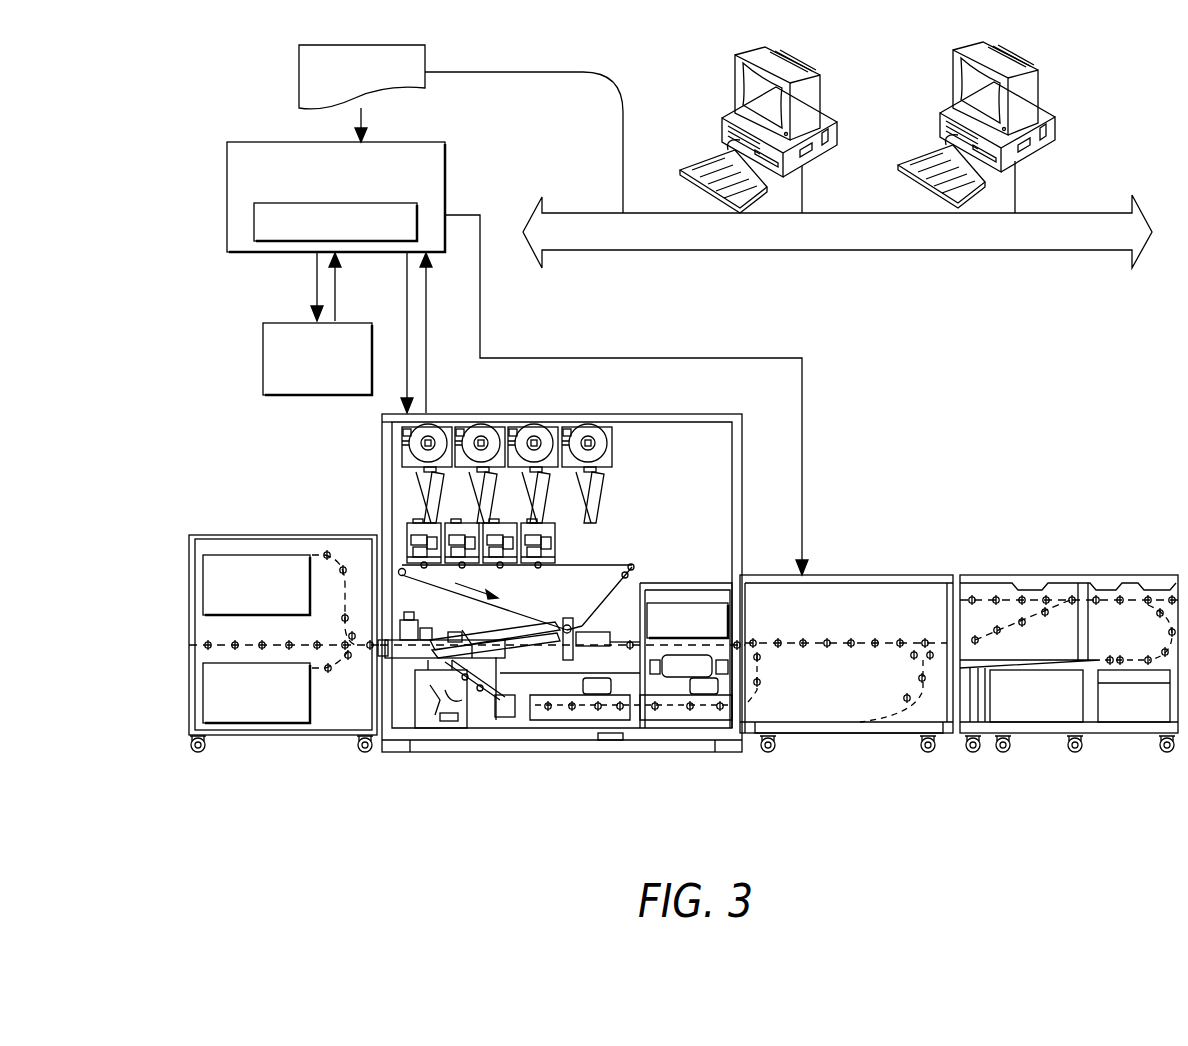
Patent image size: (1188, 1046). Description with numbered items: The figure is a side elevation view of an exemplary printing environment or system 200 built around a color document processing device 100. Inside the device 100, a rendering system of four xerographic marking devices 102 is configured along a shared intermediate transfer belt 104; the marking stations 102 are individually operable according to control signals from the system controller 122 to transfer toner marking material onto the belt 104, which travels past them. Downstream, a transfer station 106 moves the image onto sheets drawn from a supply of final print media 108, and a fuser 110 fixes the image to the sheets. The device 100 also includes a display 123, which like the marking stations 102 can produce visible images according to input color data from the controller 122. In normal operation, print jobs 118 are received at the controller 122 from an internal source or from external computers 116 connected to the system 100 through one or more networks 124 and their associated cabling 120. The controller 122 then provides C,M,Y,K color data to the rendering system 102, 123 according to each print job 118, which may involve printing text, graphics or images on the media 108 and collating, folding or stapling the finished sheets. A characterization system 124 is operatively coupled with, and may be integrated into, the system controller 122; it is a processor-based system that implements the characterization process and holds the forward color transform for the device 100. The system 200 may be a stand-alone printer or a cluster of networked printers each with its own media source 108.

The color processing device 100 is at (381, 450).
The marking devices 102 is at (573, 545).
The intermediate transfer belt 104 is at (450, 592).
The transfer station 106 is at (568, 614).
The supply of final print media 108 is at (250, 615).
The fuser 110 is at (736, 626).
The computers 116 is at (822, 83).
The print job 118 is at (426, 50).
The cabling 120 is at (623, 183).
The system controller 122 is at (227, 183).
The display 123 is at (263, 360).
The characterization system 124 is at (300, 203).
The printing environment or system 200 is at (187, 142).